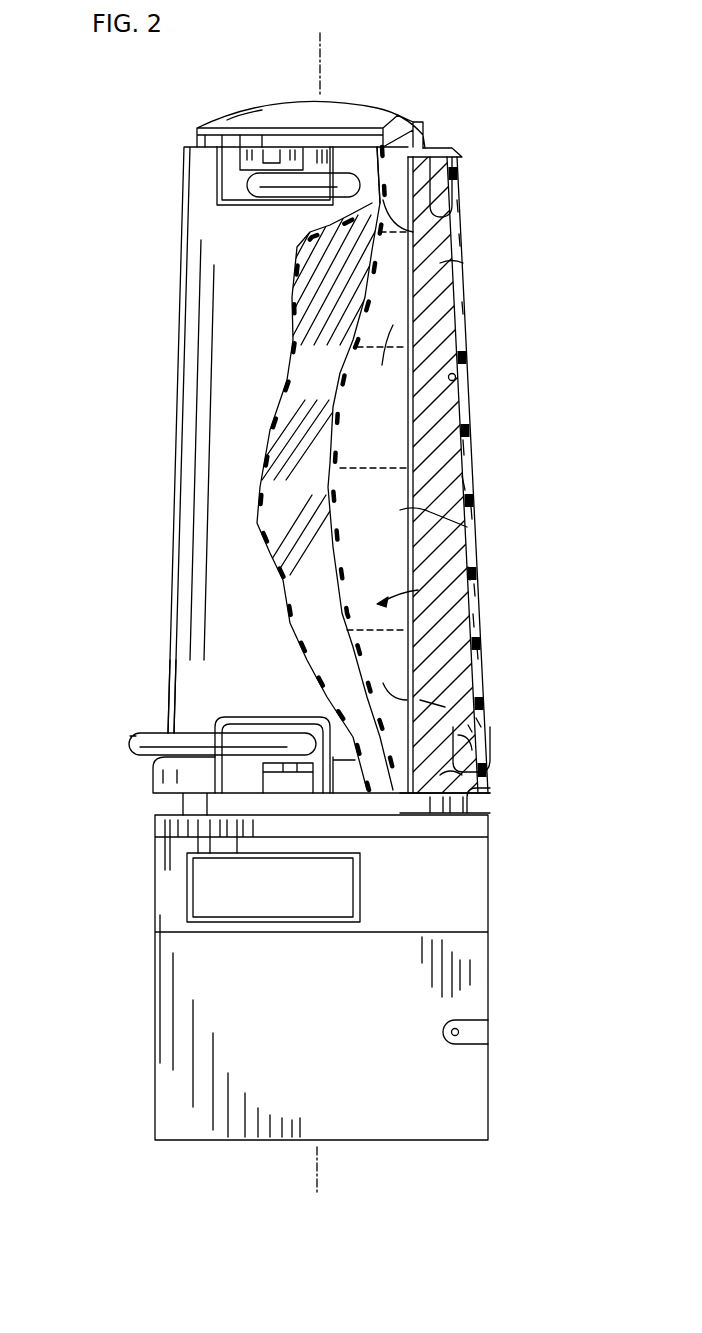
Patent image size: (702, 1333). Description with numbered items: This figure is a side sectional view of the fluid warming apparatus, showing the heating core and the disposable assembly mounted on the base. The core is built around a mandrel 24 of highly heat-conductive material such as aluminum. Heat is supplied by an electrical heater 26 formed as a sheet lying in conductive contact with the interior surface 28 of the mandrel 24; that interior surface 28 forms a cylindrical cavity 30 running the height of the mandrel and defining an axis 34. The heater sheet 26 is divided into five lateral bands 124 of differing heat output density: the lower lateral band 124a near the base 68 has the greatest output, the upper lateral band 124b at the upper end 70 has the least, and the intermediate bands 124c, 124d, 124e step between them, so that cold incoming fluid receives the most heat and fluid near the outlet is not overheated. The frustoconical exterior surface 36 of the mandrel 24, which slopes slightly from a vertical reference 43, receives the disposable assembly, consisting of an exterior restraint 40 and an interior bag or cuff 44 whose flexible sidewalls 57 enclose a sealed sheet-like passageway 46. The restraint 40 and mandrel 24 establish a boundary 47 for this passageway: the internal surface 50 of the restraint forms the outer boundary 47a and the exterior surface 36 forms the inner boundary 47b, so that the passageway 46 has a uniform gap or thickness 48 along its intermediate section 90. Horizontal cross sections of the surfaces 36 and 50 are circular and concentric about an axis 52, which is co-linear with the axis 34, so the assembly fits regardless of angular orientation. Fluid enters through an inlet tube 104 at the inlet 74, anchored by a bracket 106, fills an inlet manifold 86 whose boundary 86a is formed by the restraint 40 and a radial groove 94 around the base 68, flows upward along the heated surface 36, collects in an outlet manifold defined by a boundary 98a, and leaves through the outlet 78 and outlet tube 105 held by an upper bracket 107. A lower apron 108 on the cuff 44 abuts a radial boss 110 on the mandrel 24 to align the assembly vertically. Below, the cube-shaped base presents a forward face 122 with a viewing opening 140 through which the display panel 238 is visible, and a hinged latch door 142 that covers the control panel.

The mandrel 24 is at (182, 278).
The electrical heater 26 is at (467, 398).
The interior surface 28 is at (415, 332).
The cylindrical cavity 30 is at (380, 422).
The axis 34 is at (321, 52).
The exterior surface 36 is at (201, 352).
The exterior restraint 40 is at (467, 573).
The vertical reference 43 is at (480, 737).
The cuff 44 is at (457, 740).
The sealed passageway 46 is at (477, 620).
The boundary 47 is at (420, 401).
The heater strip upper portion 47a is at (455, 373).
The inner boundary 47b is at (467, 447).
The uniform gap 48 is at (467, 482).
The internal surface 50 is at (463, 263).
The axis 52 is at (322, 92).
The flexible sidewalls 57 is at (293, 232).
The base 68 is at (443, 707).
The upper end 70 is at (457, 145).
The inlet 74 is at (273, 740).
The outlet 78 is at (240, 183).
The inlet manifold portion 86 is at (480, 725).
The boundary 86a is at (472, 730).
The intermediate section 90 is at (467, 527).
The radial groove 94 is at (467, 773).
The boundary 98a is at (457, 172).
The inlet tube 104 is at (130, 750).
The outlet tube 105 is at (350, 177).
The bracket 106 is at (210, 712).
The upper bracket 107 is at (222, 163).
The lower apron 108 is at (153, 773).
The radial boss 110 is at (470, 803).
The forward face 122 is at (478, 900).
The lateral bands 124 is at (470, 590).
The lower lateral band 124a is at (483, 653).
The upper lateral band 124b is at (460, 205).
The intermediate band 124c is at (483, 513).
The intermediate band 124d is at (463, 308).
The intermediate band 124e is at (460, 240).
The viewing opening 140 is at (360, 903).
The latch door 142 is at (477, 1112).
The display panel 238 is at (340, 878).